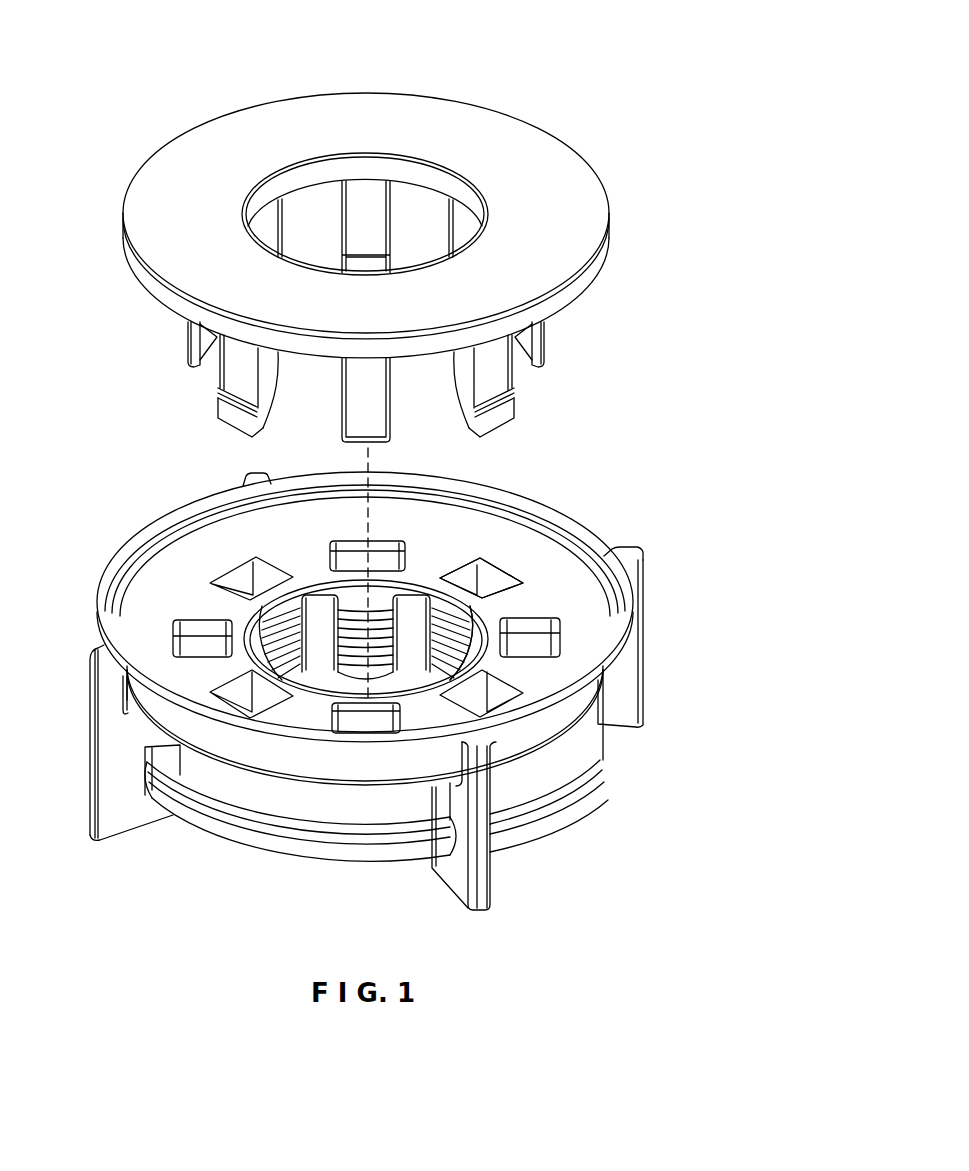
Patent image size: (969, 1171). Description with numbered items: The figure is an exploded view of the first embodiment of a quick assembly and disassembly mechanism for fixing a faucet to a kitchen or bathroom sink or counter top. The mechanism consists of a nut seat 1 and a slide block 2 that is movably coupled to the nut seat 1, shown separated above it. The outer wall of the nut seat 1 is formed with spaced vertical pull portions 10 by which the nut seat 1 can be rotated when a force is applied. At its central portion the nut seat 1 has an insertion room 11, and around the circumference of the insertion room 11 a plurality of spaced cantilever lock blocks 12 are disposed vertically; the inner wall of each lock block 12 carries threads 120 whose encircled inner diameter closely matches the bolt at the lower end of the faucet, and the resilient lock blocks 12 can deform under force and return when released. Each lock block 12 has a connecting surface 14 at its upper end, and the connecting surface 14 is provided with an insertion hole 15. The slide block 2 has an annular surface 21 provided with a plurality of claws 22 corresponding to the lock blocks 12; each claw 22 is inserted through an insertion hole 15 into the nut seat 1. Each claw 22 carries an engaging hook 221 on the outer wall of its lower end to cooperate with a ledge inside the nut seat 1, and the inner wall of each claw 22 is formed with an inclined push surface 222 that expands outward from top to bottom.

The nut seat 1 is at (378, 686).
The slide block 2 is at (394, 239).
The pull portions 10 is at (627, 706).
The insertion room 11 is at (382, 686).
The cantilever lock blocks 12 is at (448, 633).
The connecting surface 14 is at (195, 605).
The insertion hole 15 is at (495, 583).
The annular surface 21 is at (548, 170).
The claws 22 is at (200, 345).
The threads 120 is at (490, 668).
The engaging hook 221 is at (233, 403).
The inclined push surface 222 is at (273, 407).